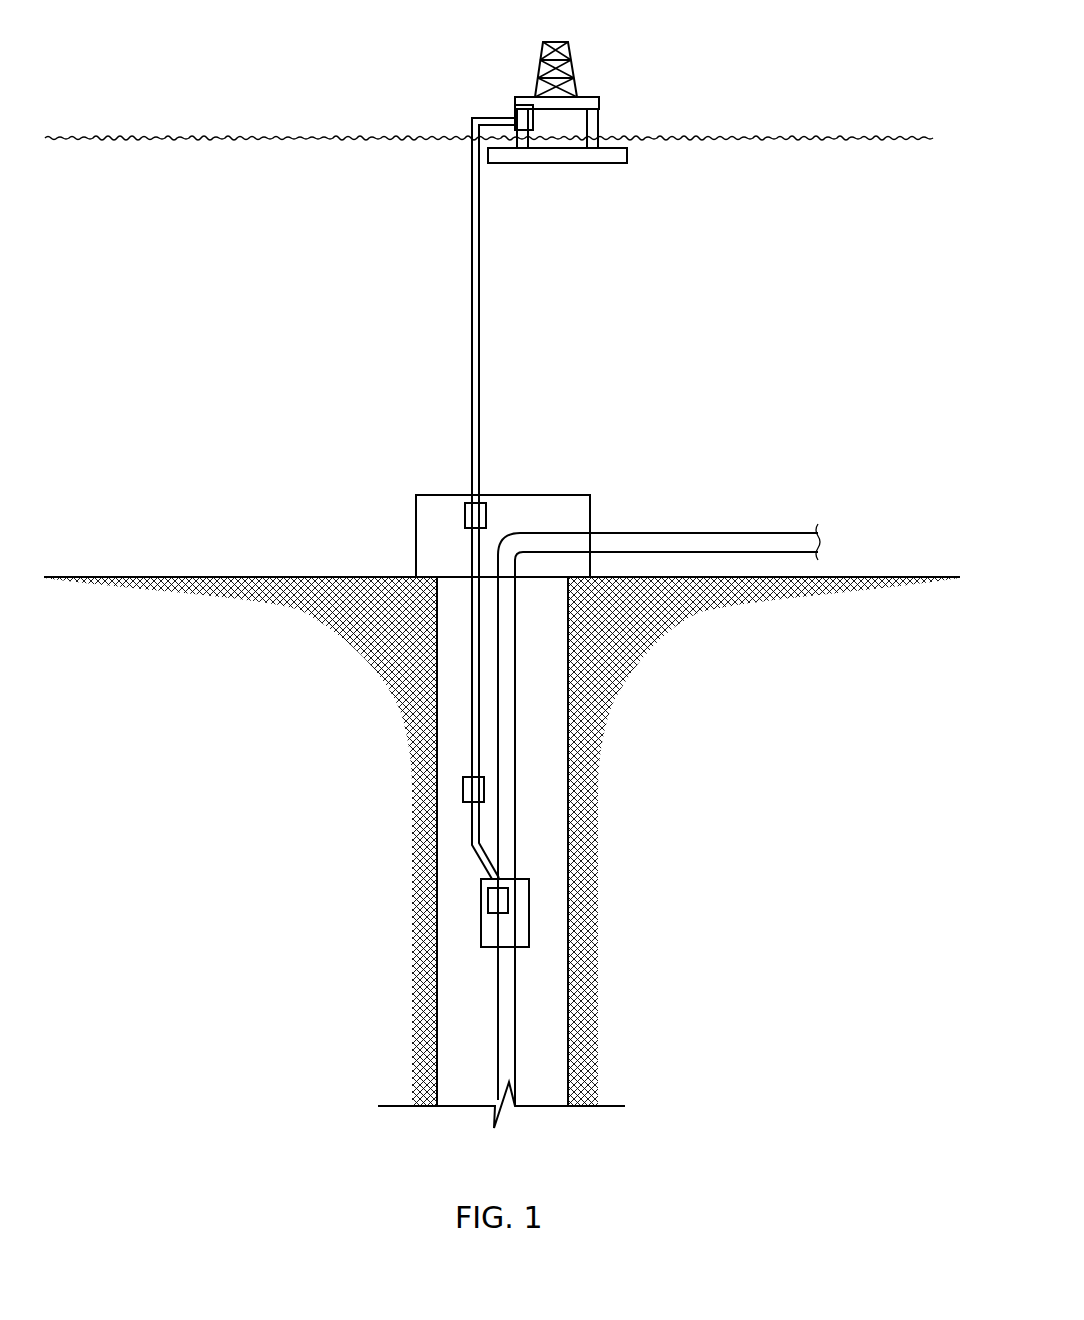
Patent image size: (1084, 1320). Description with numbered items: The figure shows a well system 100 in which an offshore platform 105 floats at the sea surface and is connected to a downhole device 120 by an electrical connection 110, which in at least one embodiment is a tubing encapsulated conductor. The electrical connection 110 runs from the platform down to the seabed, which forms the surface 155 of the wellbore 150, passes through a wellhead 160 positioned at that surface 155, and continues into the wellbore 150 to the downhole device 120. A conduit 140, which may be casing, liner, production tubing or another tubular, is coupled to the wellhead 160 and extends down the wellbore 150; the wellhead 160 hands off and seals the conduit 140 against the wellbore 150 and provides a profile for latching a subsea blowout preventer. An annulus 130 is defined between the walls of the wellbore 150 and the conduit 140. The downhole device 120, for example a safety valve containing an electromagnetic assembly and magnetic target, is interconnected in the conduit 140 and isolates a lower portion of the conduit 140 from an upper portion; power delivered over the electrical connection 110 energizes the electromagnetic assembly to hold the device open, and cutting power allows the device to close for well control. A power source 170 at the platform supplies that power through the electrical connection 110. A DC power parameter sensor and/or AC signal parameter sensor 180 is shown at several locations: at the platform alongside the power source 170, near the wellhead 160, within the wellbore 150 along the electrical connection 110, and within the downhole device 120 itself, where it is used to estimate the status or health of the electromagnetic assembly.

The well system 100 is at (612, 54).
The offshore platform 105 is at (585, 128).
The electrical connection 110 is at (480, 440).
The downhole device 120 is at (530, 905).
The annulus 130 is at (548, 852).
The conduit 140 is at (516, 765).
The wellbore 150 is at (569, 797).
The surface 155 is at (237, 577).
The wellhead 160 is at (572, 497).
The power source 170 is at (515, 117).
The DC power parameter sensor and/or AC signal parameter sensor 180 is at (465, 512).